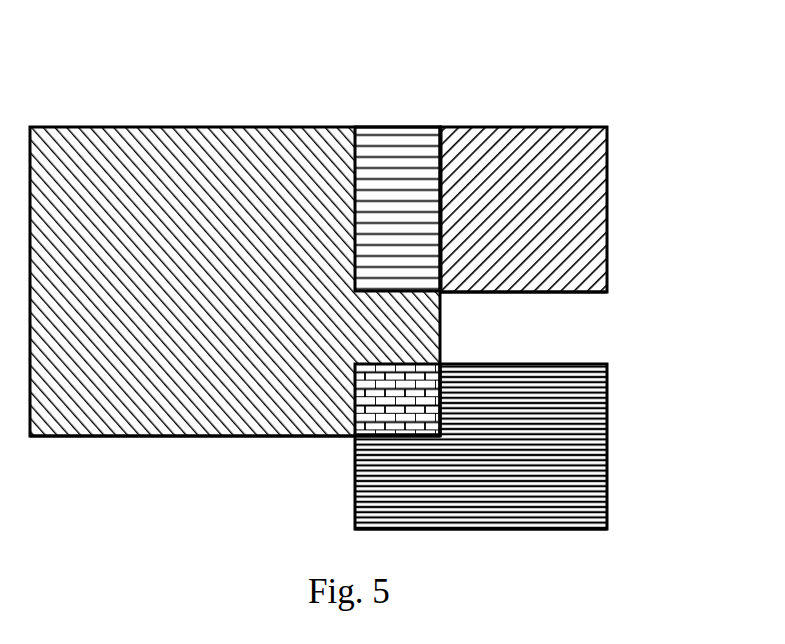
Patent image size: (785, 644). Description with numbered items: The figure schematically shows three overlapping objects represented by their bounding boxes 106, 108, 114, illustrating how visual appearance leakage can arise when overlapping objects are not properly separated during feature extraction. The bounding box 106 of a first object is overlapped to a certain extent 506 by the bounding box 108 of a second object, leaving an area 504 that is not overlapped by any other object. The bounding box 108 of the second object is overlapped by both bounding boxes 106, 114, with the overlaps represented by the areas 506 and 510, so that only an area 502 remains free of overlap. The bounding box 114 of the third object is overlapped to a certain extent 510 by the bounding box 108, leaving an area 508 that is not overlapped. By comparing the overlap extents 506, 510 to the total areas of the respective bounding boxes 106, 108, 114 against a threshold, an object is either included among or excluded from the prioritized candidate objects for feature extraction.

The non-overlapped area of the second object's bounding box 502 is at (222, 377).
The non-overlapped area of the first object's bounding box 504 is at (575, 217).
The overlap extent between first and second objects 506 is at (400, 177).
The non-overlapped area of the third object's bounding box 508 is at (577, 442).
The overlap extent between second and third objects 510 is at (372, 403).
The bounding box of first object 106 is at (607, 288).
The bounding box of second object 108 is at (52, 437).
The bounding box of third object 114 is at (592, 530).